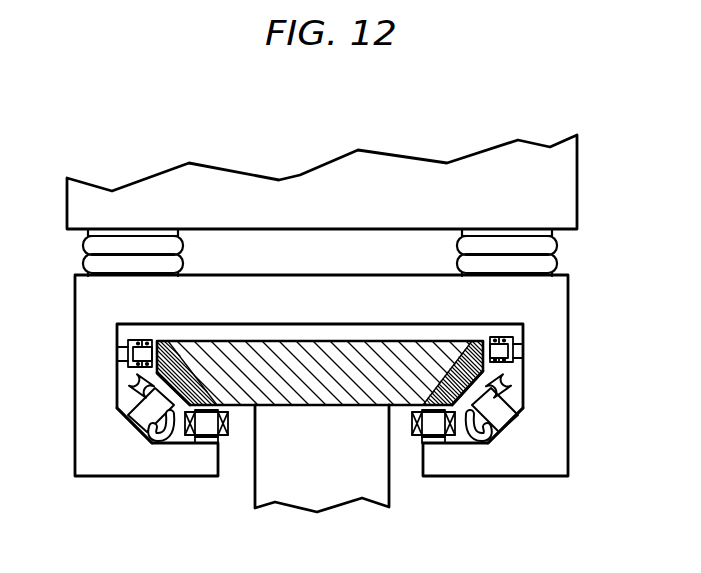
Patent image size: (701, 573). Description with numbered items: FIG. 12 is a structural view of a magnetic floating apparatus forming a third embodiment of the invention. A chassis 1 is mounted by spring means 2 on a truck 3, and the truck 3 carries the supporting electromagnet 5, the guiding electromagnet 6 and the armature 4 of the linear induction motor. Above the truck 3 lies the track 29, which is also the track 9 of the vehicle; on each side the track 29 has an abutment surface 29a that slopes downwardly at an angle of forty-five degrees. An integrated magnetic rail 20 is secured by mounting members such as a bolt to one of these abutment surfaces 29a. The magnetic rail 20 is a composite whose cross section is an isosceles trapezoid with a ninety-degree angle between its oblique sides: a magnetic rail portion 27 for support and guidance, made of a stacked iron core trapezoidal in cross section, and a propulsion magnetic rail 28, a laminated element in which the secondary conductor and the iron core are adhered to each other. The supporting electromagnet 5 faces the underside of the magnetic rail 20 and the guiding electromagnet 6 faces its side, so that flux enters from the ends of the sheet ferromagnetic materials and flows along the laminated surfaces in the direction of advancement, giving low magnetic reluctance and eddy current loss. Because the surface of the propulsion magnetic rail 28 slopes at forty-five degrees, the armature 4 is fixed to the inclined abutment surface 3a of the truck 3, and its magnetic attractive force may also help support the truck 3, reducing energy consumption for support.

The chassis 1 is at (577, 179).
The spring means 2 is at (557, 257).
The truck 3 is at (568, 299).
The inclined abutment surface 3a is at (506, 420).
The linear induction motor armature 4 is at (508, 417).
The supporting electromagnet 5 is at (434, 437).
The guiding electromagnet 6 is at (518, 349).
The track 9 is at (290, 496).
The integrated magnetic rail 20 is at (497, 303).
The magnetic rail portion for support and guidance 27 is at (446, 380).
The propulsion magnetic rail 28 is at (458, 374).
The track 29 is at (347, 389).
The abutment surfaces 29a is at (432, 383).